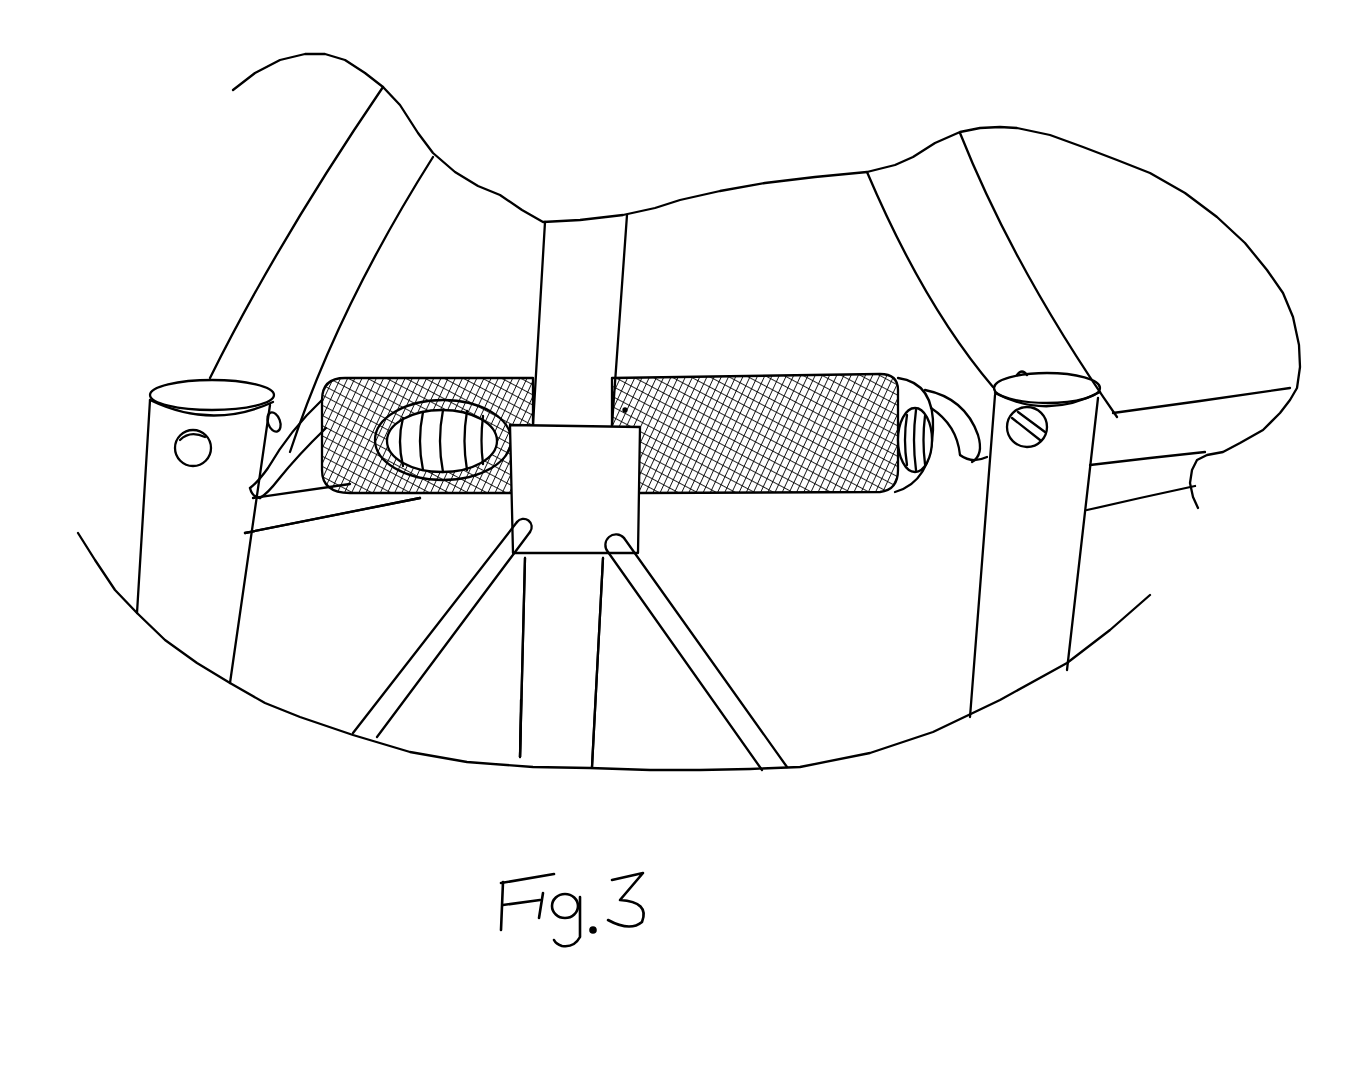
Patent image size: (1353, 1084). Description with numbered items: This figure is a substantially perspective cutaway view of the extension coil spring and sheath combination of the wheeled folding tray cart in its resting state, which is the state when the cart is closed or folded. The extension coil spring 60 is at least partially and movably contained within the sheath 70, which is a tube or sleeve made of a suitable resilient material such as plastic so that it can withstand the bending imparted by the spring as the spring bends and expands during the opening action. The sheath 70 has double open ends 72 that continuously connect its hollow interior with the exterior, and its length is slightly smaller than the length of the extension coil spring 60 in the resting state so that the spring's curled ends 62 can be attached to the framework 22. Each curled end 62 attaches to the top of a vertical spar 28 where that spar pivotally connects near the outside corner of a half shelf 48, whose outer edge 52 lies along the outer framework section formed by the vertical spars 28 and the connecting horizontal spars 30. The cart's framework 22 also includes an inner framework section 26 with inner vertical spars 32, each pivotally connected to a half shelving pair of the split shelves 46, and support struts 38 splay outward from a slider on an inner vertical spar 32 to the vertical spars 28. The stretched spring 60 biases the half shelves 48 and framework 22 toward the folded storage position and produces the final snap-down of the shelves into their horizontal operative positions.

The framework 22 is at (160, 492).
The inner framework section 26 is at (583, 733).
The vertical spar 28 is at (207, 628).
The horizontal spar 30 is at (326, 500).
The inner vertical spar 32 is at (597, 258).
The support strut 38 is at (395, 712).
The split shelf 46 is at (338, 196).
The half shelf 48 is at (292, 255).
The outer edge 52 is at (1233, 340).
The extension coil spring 60 is at (380, 500).
The curled end 62 is at (276, 482).
The sheath 70 is at (713, 373).
The open end 72 is at (335, 373).